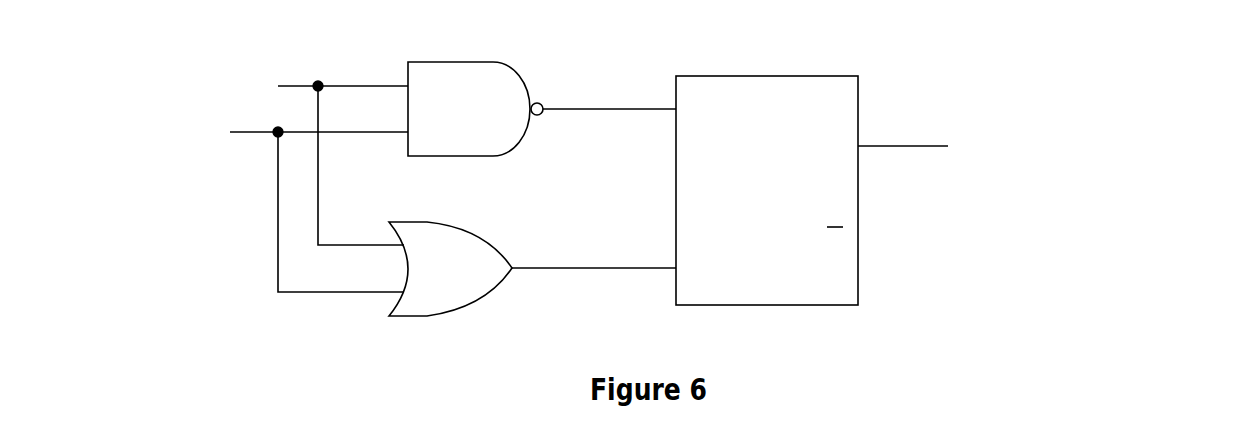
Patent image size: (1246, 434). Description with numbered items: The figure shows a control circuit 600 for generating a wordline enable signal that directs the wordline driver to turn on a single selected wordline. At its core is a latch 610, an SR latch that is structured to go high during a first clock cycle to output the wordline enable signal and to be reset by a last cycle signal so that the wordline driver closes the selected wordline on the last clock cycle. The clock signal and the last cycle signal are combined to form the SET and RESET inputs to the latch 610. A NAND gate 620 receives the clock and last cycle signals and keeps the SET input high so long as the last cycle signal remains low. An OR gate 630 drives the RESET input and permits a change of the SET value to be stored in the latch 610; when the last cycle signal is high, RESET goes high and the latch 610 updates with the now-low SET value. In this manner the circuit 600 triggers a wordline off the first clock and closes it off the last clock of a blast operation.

The circuit 600 is at (80, 88).
The latch 610 is at (835, 76).
The NAND gate 620 is at (475, 109).
The OR gate 630 is at (450, 269).